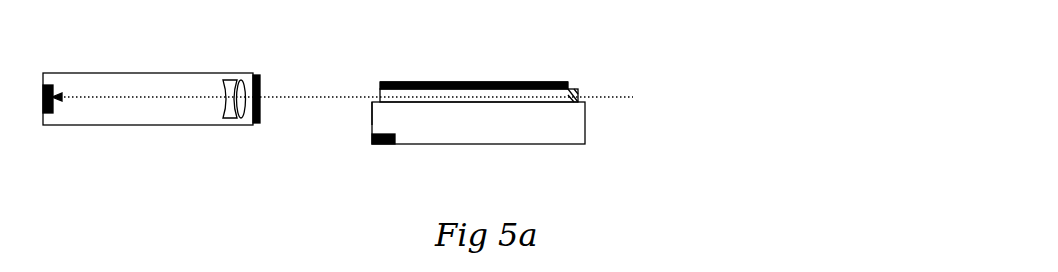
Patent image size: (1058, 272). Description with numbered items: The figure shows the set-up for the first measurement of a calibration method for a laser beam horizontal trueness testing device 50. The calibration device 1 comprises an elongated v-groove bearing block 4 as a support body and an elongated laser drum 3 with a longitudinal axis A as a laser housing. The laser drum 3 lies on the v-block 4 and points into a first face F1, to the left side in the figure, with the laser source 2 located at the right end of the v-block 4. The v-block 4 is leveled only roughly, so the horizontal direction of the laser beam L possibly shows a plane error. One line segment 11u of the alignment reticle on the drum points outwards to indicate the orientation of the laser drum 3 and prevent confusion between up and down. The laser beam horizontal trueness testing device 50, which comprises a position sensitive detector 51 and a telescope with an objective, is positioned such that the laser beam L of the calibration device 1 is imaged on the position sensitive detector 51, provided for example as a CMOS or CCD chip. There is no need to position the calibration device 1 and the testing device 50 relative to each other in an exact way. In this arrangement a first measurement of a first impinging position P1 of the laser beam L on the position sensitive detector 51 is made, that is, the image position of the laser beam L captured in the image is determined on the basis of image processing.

The calibration device 1 is at (476, 53).
The laser source 2 is at (573, 100).
The laser drum 3 is at (437, 95).
The v-groove bearing block 4 is at (558, 131).
The line segment of the reticle 11u is at (402, 82).
The laser beam horizontal trueness testing device 50 is at (237, 62).
The position sensitive detector 51 is at (48, 83).
The laser beam L is at (196, 97).
The longitudinal axis A is at (622, 95).
The first face F1 is at (360, 113).
The first impinging position P1 is at (57, 117).